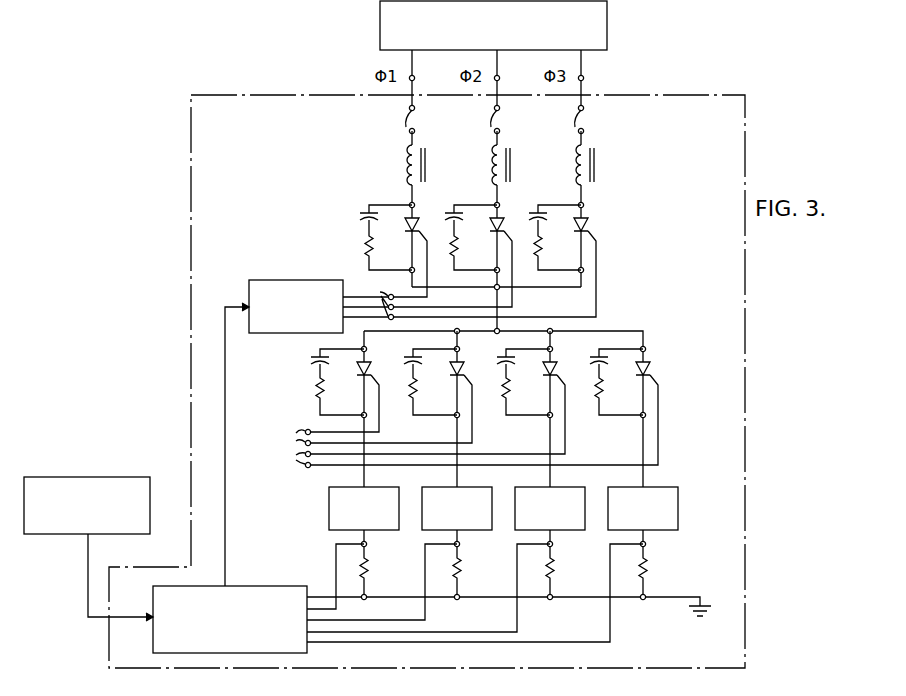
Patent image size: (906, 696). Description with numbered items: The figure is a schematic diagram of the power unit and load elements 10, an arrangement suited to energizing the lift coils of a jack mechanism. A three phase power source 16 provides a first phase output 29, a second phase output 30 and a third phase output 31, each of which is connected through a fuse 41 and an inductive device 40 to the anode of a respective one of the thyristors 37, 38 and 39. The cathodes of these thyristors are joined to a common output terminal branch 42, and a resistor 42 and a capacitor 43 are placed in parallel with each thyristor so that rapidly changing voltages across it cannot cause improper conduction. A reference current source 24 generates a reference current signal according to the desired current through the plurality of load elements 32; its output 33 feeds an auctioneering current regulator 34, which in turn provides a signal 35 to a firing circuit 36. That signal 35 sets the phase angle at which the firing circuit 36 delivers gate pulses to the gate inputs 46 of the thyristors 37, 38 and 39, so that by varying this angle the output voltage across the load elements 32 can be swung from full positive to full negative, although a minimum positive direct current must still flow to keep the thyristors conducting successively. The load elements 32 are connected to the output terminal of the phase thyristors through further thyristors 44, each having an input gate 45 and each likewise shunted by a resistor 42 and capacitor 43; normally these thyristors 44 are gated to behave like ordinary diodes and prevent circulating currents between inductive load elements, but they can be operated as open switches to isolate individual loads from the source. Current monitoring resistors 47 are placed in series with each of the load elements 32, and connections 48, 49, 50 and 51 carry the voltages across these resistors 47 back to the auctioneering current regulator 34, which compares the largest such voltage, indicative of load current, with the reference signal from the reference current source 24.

The power unit and load elements 10 is at (126, 150).
The three phase power source 16 is at (380, 22).
The reference current source 24 is at (68, 476).
The first phase output 29 is at (416, 80).
The second phase output 30 is at (501, 80).
The third phase output 31 is at (585, 80).
The load elements 32 is at (420, 494).
The output of reference current source 33 is at (88, 570).
The auctioneering current regulator 34 is at (246, 586).
The signal 35 is at (227, 380).
The firing circuit 36 is at (292, 280).
The thyristor 37 is at (406, 232).
The thyristor 38 is at (491, 232).
The thyristor 39 is at (575, 232).
The inductive devices 40 is at (432, 152).
The fuses 41 is at (416, 122).
The resistor / common output terminal branch 42 is at (365, 244).
The capacitor 43 is at (360, 217).
The thyristors 44 is at (356, 376).
The input gate 45 is at (289, 448).
The gate inputs 46 is at (383, 294).
The current monitoring resistors 47 is at (372, 574).
The connection 48 is at (340, 603).
The connection 49 is at (425, 616).
The connection 50 is at (517, 620).
The connection 51 is at (610, 620).